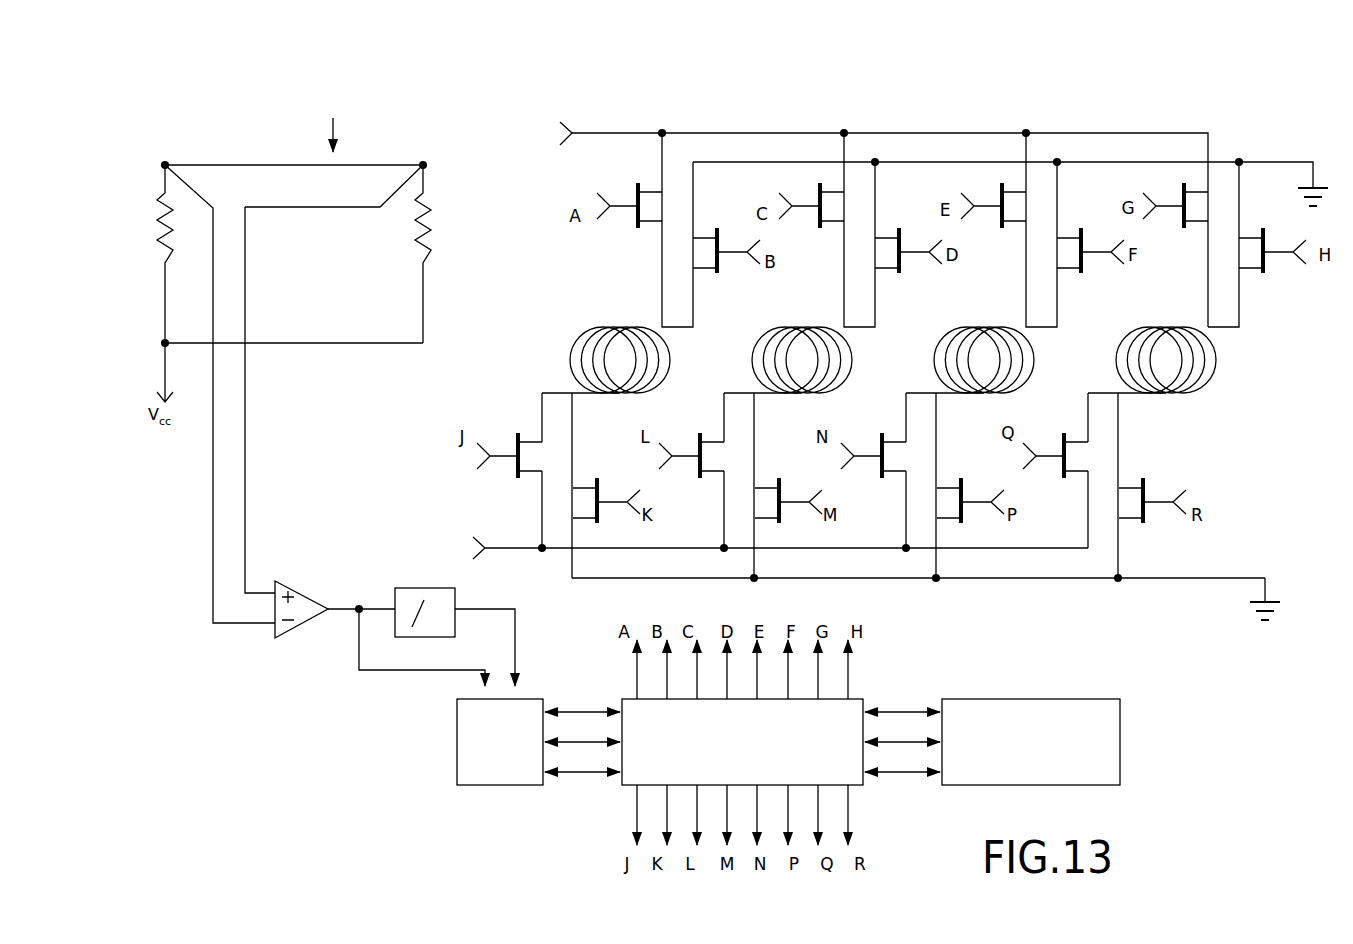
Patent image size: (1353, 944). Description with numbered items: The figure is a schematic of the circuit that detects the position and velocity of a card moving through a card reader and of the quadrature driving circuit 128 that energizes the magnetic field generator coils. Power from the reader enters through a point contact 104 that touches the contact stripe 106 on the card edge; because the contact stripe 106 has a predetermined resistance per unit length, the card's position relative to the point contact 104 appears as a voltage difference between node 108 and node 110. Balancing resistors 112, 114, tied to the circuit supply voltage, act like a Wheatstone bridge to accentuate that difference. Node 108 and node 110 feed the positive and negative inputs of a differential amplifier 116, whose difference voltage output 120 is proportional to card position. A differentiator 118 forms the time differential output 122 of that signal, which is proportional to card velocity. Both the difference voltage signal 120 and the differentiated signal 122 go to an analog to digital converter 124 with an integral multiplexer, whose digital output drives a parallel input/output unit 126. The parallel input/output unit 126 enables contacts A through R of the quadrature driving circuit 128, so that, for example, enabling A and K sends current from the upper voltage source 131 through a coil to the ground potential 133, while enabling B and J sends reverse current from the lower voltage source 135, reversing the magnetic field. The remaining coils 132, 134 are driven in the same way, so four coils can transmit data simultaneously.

The point contact 104 is at (334, 148).
The contact stripe 106 is at (222, 165).
The node 108 is at (425, 165).
The node 110 is at (165, 162).
The balancing resistor 112 is at (428, 235).
The balancing resistor 114 is at (173, 226).
The differential amplifier 116 is at (293, 580).
The differentiator 118 is at (428, 588).
The difference voltage output 120 is at (338, 605).
The time differential output 122 is at (515, 623).
The analog to digital converter 124 is at (457, 737).
The parallel input/output unit 126 is at (635, 778).
The quadrature driving circuit 128 is at (1128, 126).
The voltage source Vcc 131 is at (602, 135).
The coil 132 is at (770, 325).
The ground potential 133 is at (1268, 595).
The coil 134 is at (948, 326).
The voltage source Vcc 135 is at (518, 547).